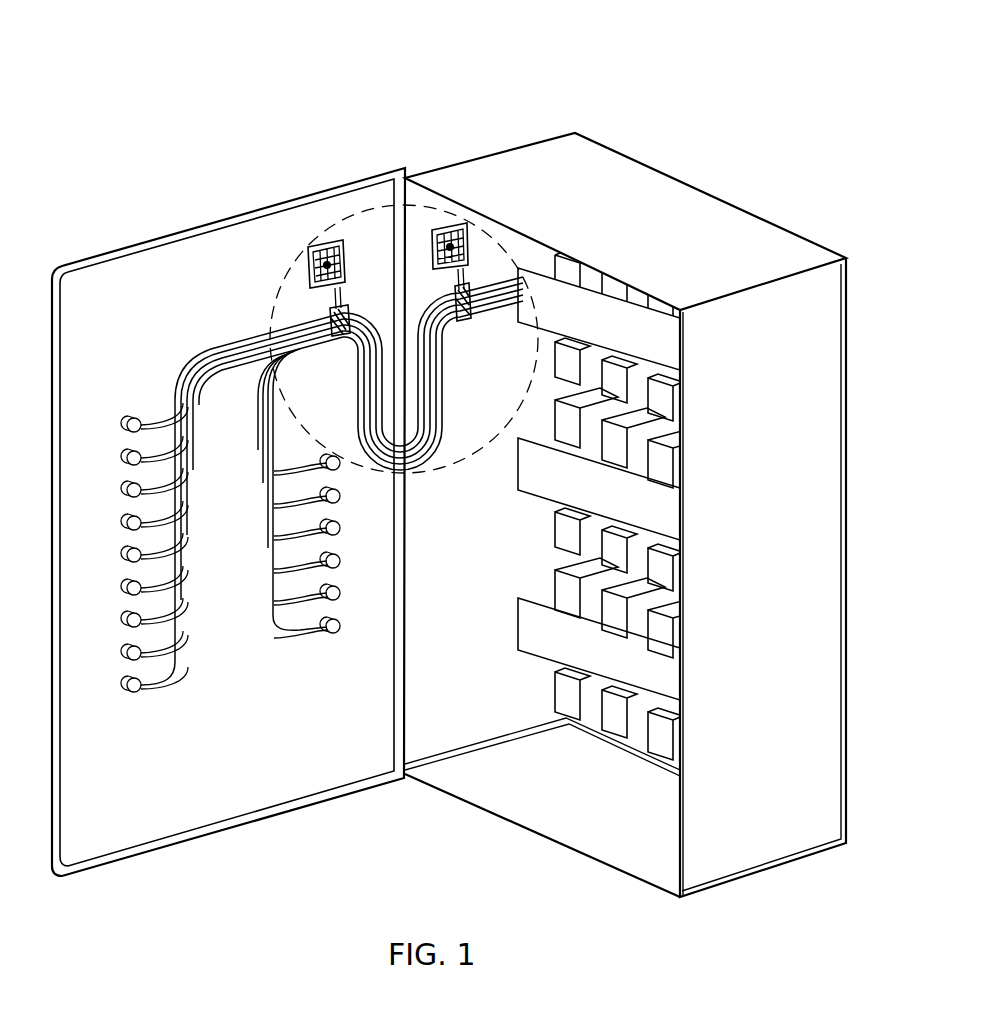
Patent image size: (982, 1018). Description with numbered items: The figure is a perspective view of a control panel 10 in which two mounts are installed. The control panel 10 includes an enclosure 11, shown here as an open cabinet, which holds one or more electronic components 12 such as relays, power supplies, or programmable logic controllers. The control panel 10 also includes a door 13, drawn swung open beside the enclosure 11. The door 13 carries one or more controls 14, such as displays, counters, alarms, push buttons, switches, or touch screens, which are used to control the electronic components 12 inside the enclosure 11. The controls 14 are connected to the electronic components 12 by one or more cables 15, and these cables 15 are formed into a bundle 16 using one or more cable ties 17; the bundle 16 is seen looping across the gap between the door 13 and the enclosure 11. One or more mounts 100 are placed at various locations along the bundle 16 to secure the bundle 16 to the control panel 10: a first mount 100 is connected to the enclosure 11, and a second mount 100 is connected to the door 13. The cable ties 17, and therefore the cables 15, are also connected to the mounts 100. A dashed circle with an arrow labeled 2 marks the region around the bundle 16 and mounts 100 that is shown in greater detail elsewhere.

The control panel 10 is at (218, 130).
The enclosure 11 is at (628, 152).
The electronic components 12 is at (520, 628).
The door 13 is at (158, 238).
The controls 14 is at (140, 696).
The cables 15 is at (175, 676).
The bundle 16 is at (504, 428).
The cable ties 17 is at (341, 337).
The mount 100 is at (342, 240).
The detail area of FIG. 2 is at (448, 465).